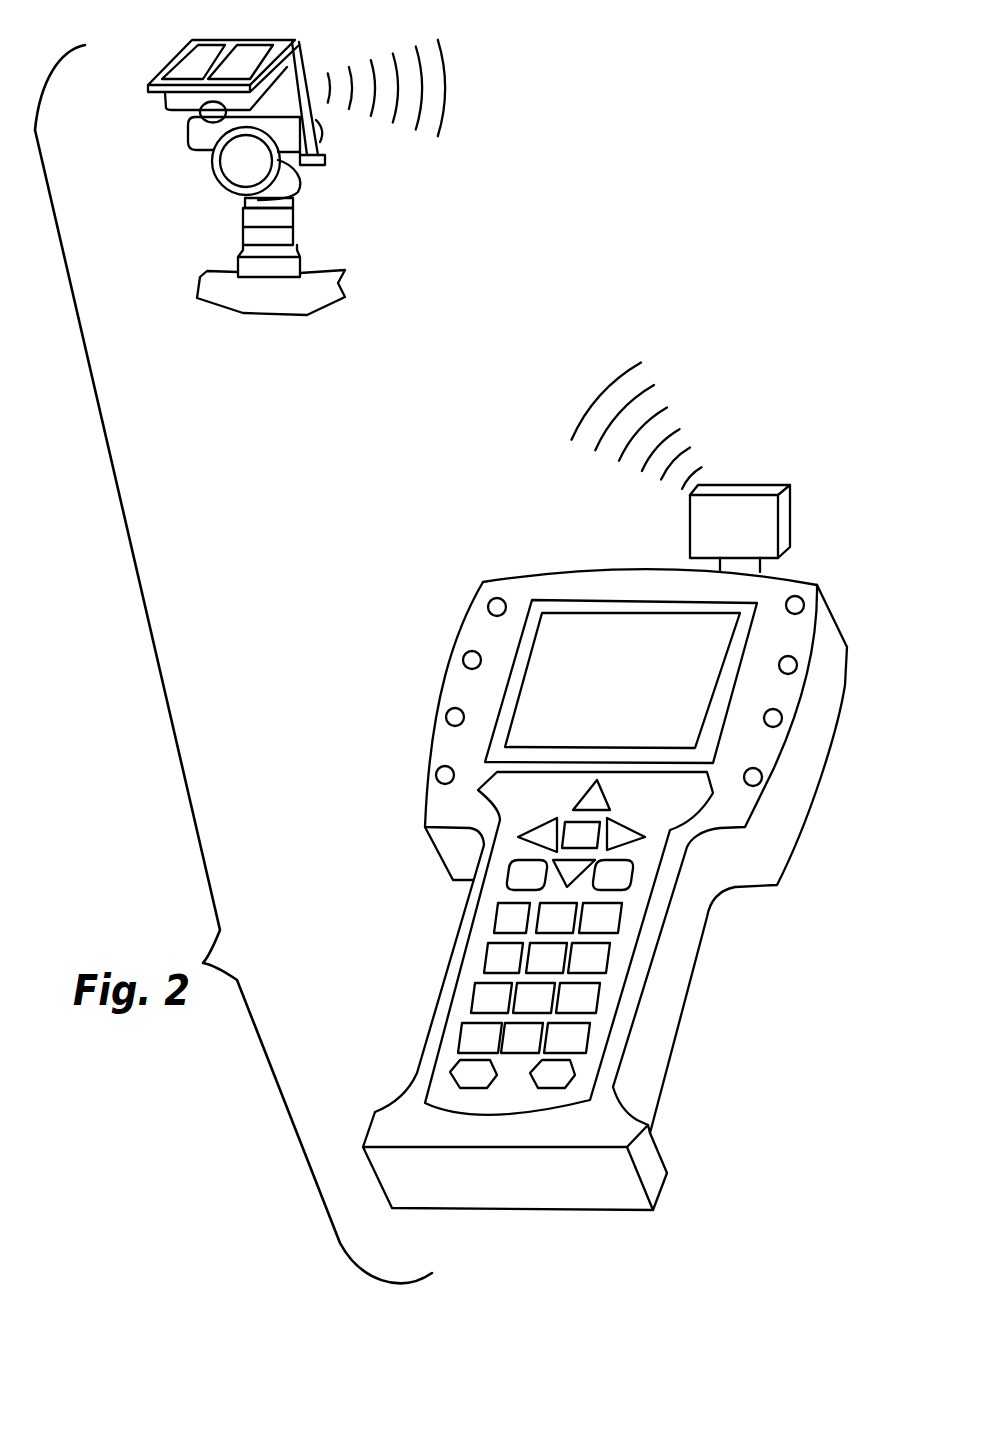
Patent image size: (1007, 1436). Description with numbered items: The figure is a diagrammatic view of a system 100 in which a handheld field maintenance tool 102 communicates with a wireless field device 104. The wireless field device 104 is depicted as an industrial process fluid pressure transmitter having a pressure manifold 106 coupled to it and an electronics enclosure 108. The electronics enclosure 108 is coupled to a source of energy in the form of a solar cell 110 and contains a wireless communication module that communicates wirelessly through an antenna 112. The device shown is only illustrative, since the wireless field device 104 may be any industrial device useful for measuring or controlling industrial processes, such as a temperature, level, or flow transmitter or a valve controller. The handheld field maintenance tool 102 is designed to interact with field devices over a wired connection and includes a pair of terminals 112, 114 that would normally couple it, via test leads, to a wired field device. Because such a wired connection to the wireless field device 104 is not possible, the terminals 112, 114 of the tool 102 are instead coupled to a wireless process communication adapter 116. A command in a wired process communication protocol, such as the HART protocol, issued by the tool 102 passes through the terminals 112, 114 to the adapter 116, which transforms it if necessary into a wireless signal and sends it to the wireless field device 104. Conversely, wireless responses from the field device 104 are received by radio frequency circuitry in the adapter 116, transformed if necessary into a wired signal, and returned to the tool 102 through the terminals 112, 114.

The system 100 is at (332, 651).
The handheld field maintenance tool 102 is at (798, 837).
The wireless field device 104 is at (290, 270).
The pressure manifold 106 is at (230, 293).
The electronics enclosure 108 is at (297, 175).
The solar cell 110 is at (197, 104).
The antenna 112 is at (303, 70).
The terminal 114 is at (713, 567).
The wireless process communication adapter 116 is at (790, 510).